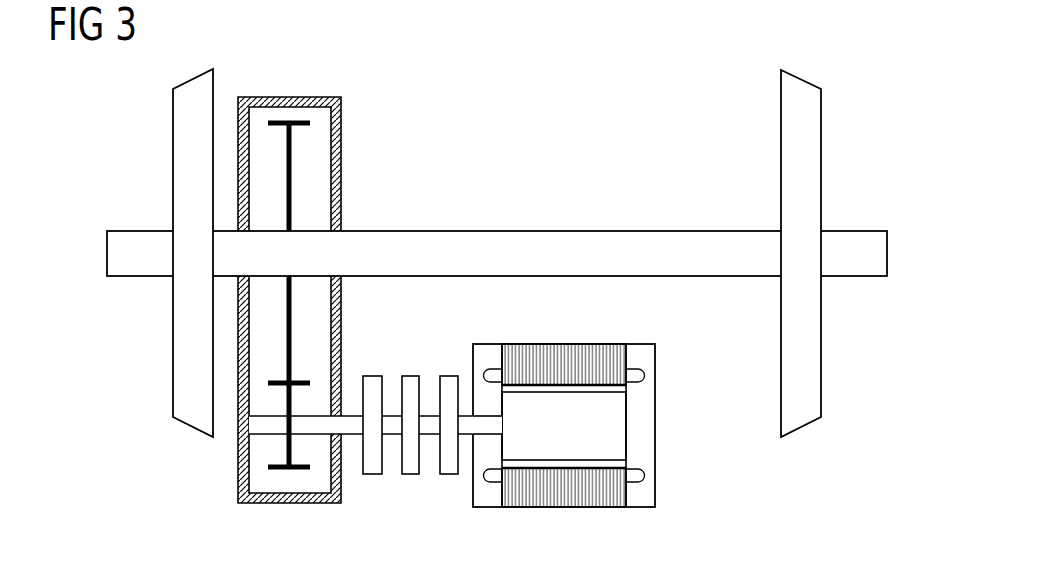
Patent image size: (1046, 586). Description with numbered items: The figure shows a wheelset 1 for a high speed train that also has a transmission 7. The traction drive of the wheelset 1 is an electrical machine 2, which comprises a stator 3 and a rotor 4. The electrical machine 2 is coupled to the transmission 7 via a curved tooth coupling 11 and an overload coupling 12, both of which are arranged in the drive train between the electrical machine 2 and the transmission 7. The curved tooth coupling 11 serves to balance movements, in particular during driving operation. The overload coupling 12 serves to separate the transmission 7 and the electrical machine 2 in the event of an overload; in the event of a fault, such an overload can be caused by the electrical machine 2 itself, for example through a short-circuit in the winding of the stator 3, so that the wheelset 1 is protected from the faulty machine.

The wheelset 1 is at (117, 116).
The electrical machine 2 is at (597, 460).
The stator 3 is at (563, 490).
The rotor 4 is at (612, 433).
The transmission 7 is at (341, 163).
The curved tooth coupling 11 is at (430, 427).
The overload coupling 12 is at (373, 465).